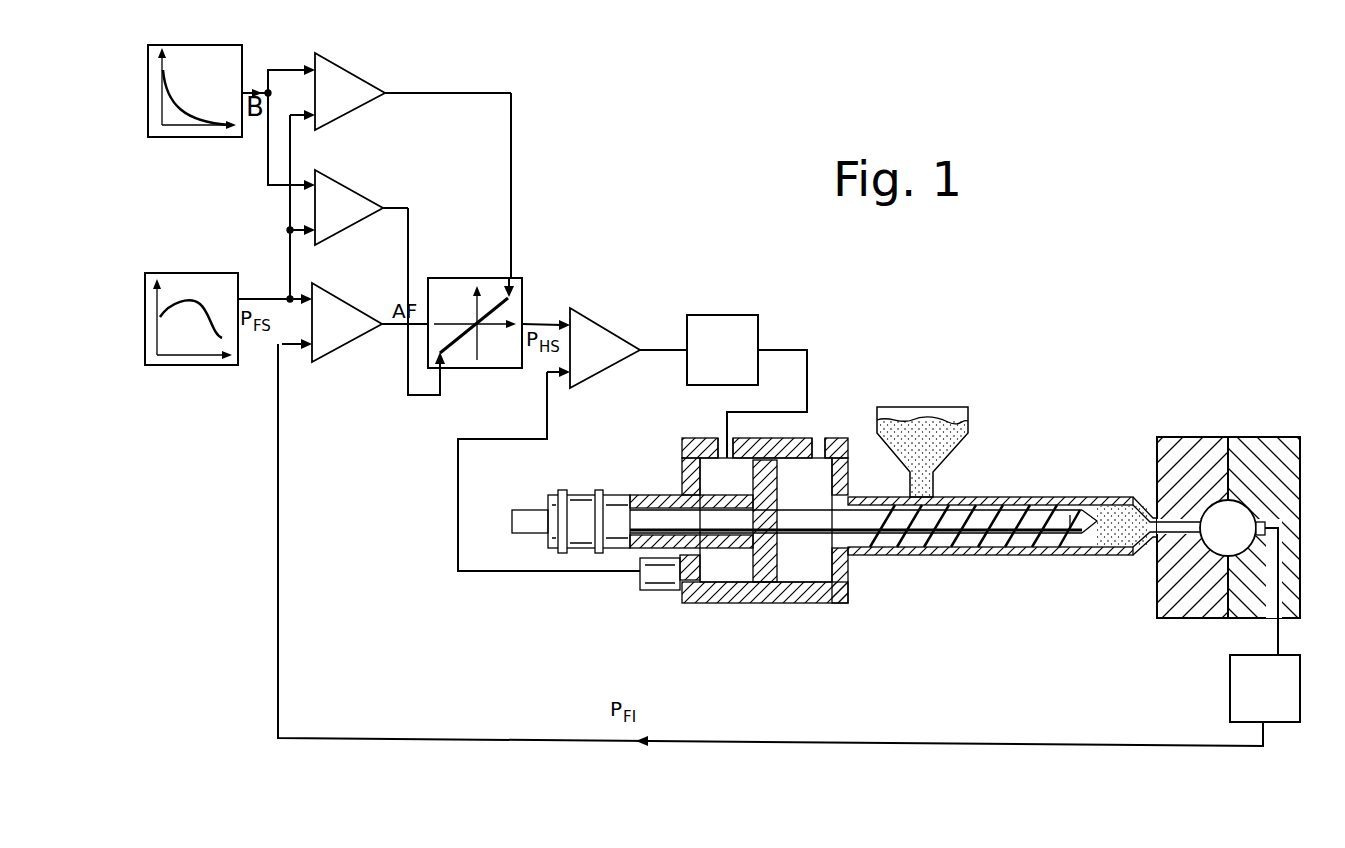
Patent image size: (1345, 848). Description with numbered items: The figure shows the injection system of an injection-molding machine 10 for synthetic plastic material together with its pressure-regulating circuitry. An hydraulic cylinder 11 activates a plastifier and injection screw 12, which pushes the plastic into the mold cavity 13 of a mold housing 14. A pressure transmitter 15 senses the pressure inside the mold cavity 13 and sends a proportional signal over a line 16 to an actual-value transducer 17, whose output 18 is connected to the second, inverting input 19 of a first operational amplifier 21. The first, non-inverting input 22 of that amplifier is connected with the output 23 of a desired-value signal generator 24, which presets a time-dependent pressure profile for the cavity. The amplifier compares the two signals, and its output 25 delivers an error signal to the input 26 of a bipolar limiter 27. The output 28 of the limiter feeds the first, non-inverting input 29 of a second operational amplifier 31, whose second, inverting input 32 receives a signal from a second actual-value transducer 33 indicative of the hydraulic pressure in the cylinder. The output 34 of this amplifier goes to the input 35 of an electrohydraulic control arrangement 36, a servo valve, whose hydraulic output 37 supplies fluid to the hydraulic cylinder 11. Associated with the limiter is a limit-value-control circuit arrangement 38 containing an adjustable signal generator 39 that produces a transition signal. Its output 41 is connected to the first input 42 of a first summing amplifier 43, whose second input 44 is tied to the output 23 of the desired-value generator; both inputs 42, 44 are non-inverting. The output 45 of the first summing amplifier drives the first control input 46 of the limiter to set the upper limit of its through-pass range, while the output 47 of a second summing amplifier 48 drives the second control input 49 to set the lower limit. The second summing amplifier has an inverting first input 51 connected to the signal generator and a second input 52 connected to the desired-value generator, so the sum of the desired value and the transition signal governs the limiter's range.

The injection-molding machine 10 is at (892, 354).
The hydraulic cylinder 11 is at (805, 603).
The plastifier and injection screw 12 is at (1017, 545).
The mold cavity 13 is at (1215, 542).
The mold housing 14 is at (1200, 450).
The pressure transmitter 15 is at (1260, 520).
The sensor line 16 is at (1276, 652).
The actual-value transducer 17 is at (1240, 686).
The output 18 is at (1262, 732).
The second input 19 is at (306, 350).
The first operational amplifier 21 is at (346, 320).
The first input 22 is at (306, 304).
The output 23 is at (247, 297).
The desired-value signal generator 24 is at (190, 362).
The output 25 is at (372, 330).
The input 26 is at (409, 322).
The bipolar limiter 27 is at (500, 366).
The output 28 is at (531, 320).
The first input 29 is at (565, 320).
The second operational amplifier 31 is at (603, 342).
The second input 32 is at (565, 380).
The second actual-value transducer 33 is at (665, 575).
The output 34 is at (642, 354).
The input 35 is at (684, 346).
The electrohydraulic control arrangement 36 is at (714, 326).
The hydraulic output 37 is at (770, 348).
The limit-value-control circuit arrangement 38 is at (440, 135).
The adjustable signal generator 39 is at (183, 137).
The output 41 is at (247, 92).
The first input 42 is at (311, 66).
The first summing amplifier 43 is at (348, 88).
The second input 44 is at (310, 122).
The output 45 is at (388, 95).
The first control input 46 is at (510, 282).
The output 47 is at (384, 212).
The second summing amplifier 48 is at (347, 200).
The second control input 49 is at (441, 370).
The first input 51 is at (310, 192).
The second input 52 is at (305, 238).